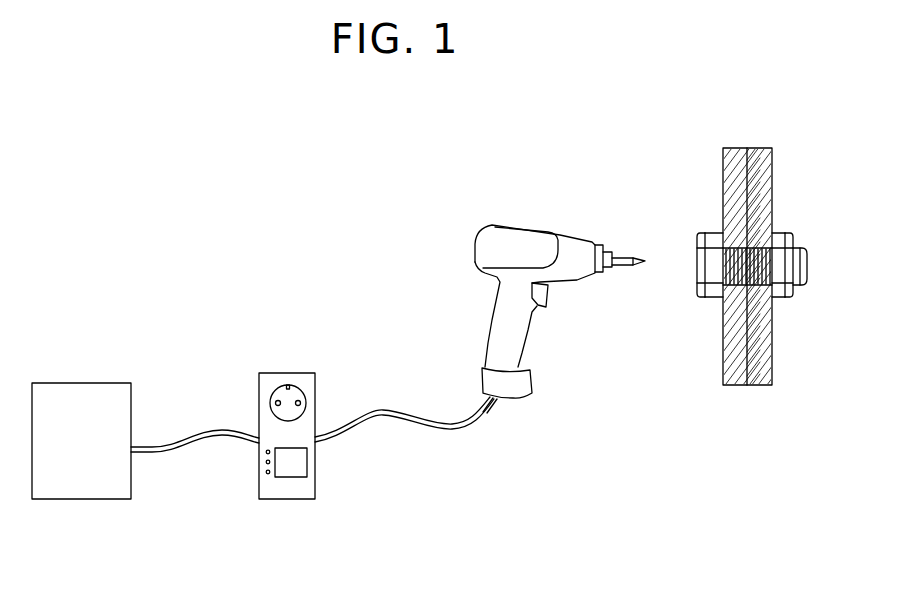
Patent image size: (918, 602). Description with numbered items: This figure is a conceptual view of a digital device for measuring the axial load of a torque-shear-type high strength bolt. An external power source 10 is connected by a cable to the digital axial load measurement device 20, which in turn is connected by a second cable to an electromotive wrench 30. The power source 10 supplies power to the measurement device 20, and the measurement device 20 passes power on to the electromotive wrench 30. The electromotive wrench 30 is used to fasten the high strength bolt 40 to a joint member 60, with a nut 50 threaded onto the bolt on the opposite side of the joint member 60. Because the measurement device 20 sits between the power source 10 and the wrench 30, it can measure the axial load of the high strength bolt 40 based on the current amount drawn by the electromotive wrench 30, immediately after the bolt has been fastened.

The power source 10 is at (73, 492).
The digital axial load measurement device 20 is at (290, 493).
The electromotive wrench 30 is at (522, 382).
The high strength bolt 40 is at (708, 300).
The nut 50 is at (782, 300).
The joint member 60 is at (738, 385).